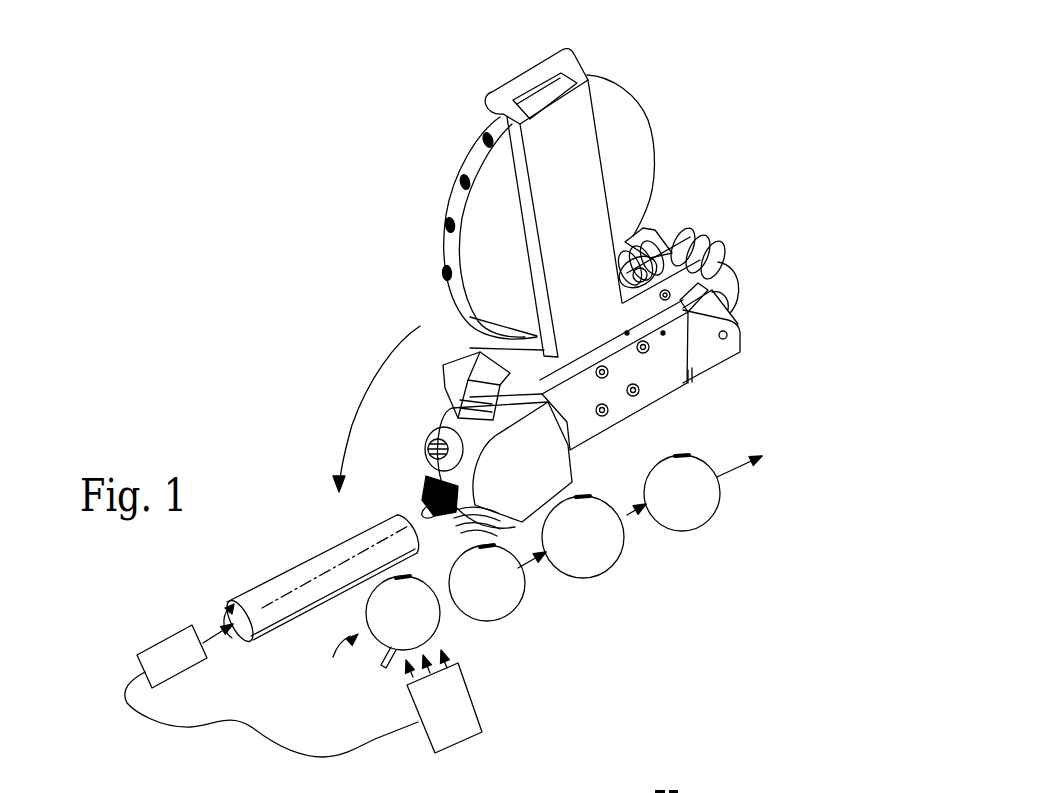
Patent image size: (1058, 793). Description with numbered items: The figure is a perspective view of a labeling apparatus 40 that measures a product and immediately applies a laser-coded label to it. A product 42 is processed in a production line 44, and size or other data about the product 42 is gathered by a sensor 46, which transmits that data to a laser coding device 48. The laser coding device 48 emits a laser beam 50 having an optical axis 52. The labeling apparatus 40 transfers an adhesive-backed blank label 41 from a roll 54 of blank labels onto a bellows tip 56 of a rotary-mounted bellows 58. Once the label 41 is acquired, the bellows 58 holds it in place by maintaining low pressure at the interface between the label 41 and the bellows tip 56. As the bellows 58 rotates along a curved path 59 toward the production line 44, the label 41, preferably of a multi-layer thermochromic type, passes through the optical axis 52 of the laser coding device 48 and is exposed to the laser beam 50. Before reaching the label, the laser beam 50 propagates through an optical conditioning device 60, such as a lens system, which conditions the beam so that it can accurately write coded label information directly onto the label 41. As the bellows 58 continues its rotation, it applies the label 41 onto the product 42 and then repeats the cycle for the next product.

The labeling apparatus 40 is at (684, 98).
The label 41 is at (484, 142).
The product 42 is at (667, 533).
The production line 44 is at (359, 661).
The sensor 46 is at (478, 707).
The laser coding device 48 is at (153, 647).
The laser beam 50 is at (212, 633).
The optical axis 52 is at (322, 572).
The roll 54 is at (612, 94).
The bellows tip 56 is at (430, 460).
The bellows 58 is at (425, 493).
The curved path 59 is at (352, 392).
The optical conditioning device 60 is at (262, 580).